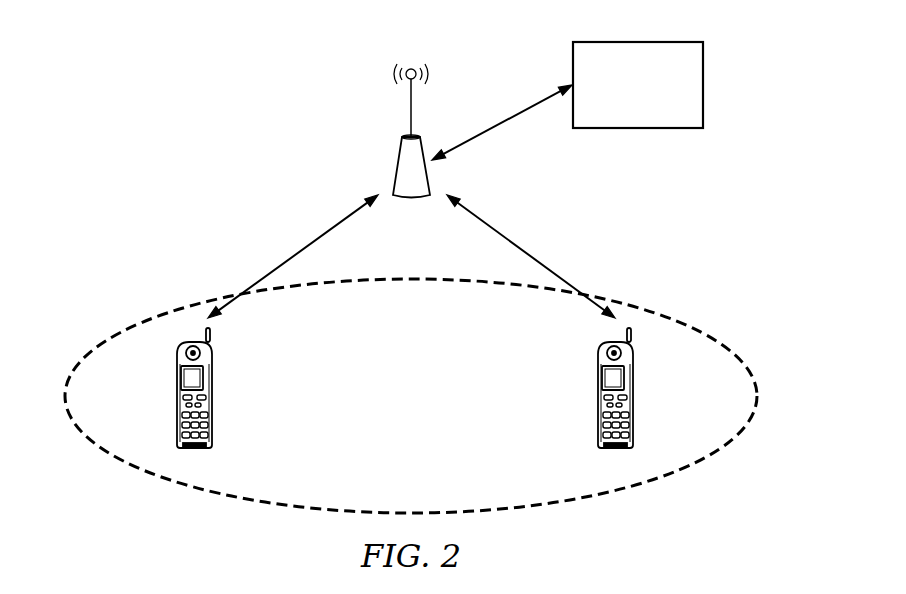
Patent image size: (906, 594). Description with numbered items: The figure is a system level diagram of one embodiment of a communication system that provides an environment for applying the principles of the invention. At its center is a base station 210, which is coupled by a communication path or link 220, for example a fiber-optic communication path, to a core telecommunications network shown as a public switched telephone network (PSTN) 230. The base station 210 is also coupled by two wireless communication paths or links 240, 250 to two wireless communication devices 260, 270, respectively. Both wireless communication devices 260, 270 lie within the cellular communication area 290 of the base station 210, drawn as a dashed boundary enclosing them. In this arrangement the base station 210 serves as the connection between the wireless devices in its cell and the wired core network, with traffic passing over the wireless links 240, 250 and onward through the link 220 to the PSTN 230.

The base station 210 is at (397, 163).
The communication path or link 220 is at (502, 122).
The public switched telephone network (PSTN) 230 is at (703, 84).
The wireless communication path or link 240 is at (287, 259).
The wireless communication path or link 250 is at (536, 258).
The wireless communication device 260 is at (177, 390).
The wireless communication device 270 is at (633, 392).
The cellular communication area 290 is at (158, 307).